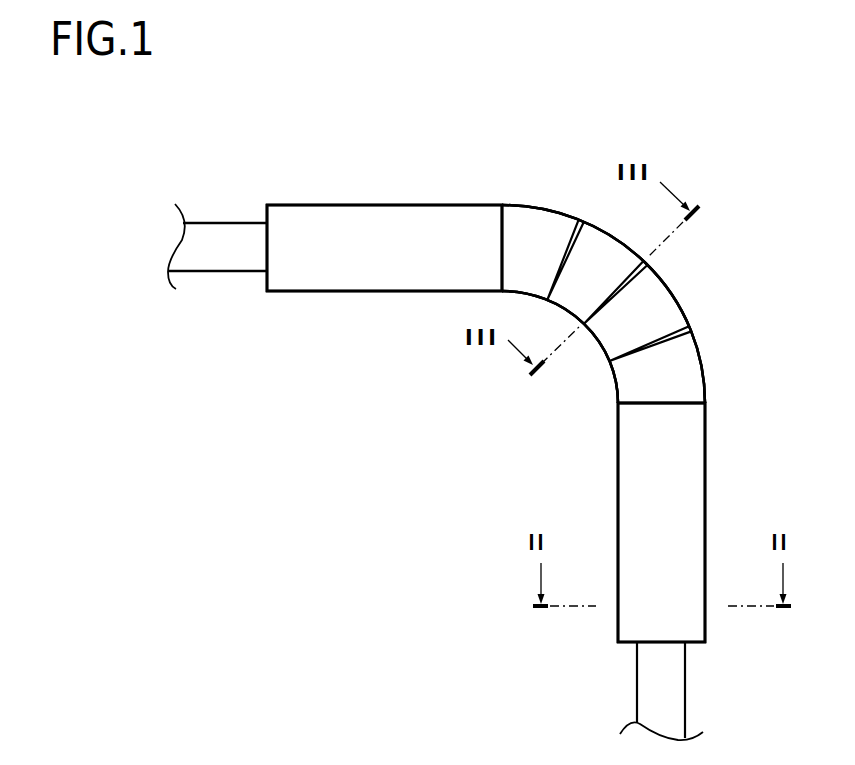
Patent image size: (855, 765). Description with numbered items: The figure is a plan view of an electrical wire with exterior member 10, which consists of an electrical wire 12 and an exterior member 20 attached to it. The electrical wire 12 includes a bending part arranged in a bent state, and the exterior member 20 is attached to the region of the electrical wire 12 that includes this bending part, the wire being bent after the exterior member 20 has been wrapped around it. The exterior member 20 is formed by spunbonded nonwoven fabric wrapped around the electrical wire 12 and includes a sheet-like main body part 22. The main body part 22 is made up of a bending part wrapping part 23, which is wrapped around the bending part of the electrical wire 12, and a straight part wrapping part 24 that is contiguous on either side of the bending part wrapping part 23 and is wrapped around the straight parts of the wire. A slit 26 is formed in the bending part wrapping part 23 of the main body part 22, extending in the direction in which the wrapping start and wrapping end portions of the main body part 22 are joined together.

The electrical wire with exterior member 10 is at (266, 164).
The electrical wire 12 is at (224, 272).
The exterior member 20 is at (352, 292).
The main body part 22 is at (527, 407).
The bending part wrapping part 23 is at (617, 384).
The straight part wrapping part 24 is at (386, 218).
The slit 26 is at (504, 222).